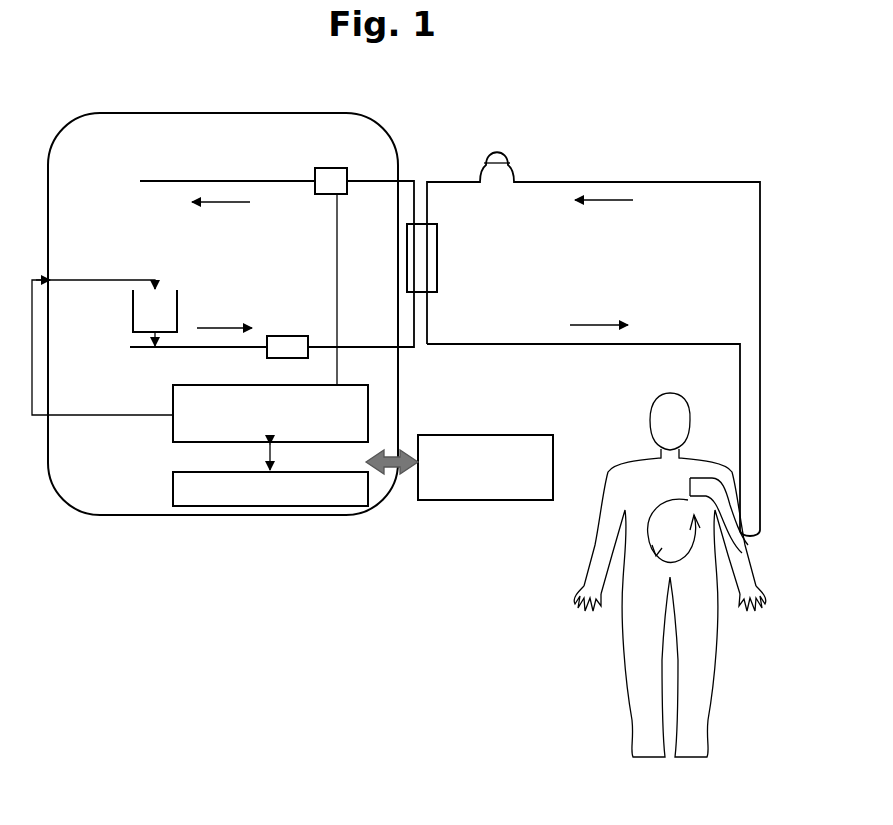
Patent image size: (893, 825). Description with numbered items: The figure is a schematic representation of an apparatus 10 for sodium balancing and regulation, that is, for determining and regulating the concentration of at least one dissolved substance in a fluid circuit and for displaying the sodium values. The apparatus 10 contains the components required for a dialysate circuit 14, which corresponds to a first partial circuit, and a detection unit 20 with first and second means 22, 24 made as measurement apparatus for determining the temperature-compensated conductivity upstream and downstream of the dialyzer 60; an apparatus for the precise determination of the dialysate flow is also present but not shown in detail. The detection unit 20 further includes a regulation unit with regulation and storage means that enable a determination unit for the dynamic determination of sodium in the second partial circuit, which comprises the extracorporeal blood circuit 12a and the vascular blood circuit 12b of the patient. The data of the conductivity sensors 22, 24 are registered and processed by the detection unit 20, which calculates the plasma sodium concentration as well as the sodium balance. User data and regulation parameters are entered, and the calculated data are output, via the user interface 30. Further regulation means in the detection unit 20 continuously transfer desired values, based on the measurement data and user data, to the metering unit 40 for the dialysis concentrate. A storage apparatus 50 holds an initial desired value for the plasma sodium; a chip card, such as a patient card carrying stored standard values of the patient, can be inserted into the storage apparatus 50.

The apparatus 10 is at (350, 535).
The dialysate circuit 14 is at (272, 264).
The extracorporeal blood circuit 12a is at (593, 344).
The vascular blood circuit 12b is at (672, 527).
The detection unit 20 is at (270, 427).
The first means / measurement apparatus 22 is at (290, 347).
The second means / measurement apparatus 24 is at (333, 183).
The user interface 30 is at (270, 489).
The metering unit 40 is at (104, 347).
The storage apparatus 50 is at (459, 467).
The dialyzer 60 is at (428, 260).